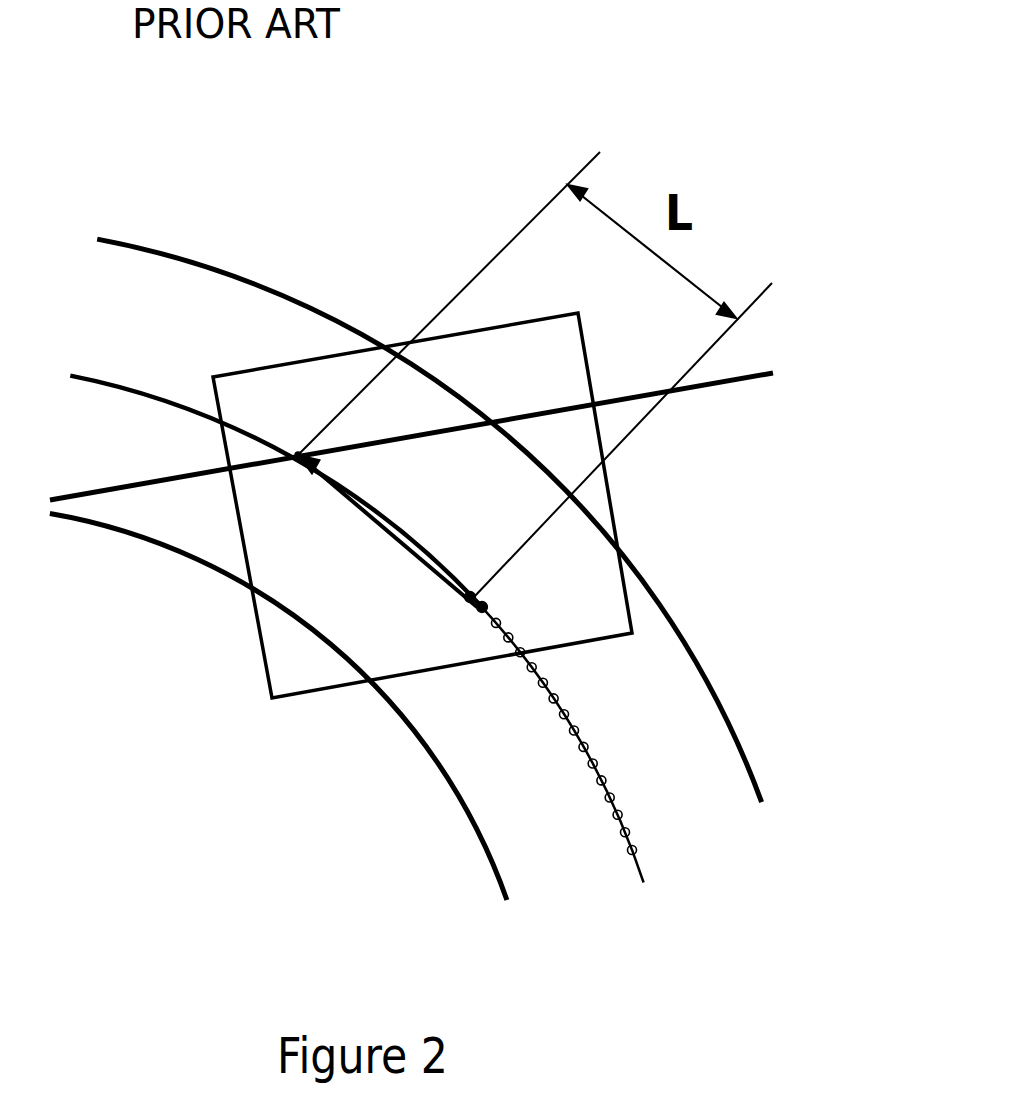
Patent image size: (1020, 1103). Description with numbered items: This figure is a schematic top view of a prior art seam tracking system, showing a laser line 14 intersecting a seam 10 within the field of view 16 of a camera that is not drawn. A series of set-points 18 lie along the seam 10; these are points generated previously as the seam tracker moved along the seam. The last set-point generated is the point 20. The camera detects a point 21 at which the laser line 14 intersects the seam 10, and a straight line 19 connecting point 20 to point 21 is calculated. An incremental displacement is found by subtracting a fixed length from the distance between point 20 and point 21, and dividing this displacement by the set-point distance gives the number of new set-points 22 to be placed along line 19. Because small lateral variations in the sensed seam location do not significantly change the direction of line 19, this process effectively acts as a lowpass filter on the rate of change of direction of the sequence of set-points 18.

The seam 10 is at (125, 387).
The laser line 14 is at (762, 368).
The field of view 16 is at (275, 367).
The set-points 18 is at (607, 780).
The straight line 19 is at (382, 530).
The last set-point 20 is at (485, 600).
The intersection point 21 is at (300, 457).
The new set-points 22 is at (470, 585).